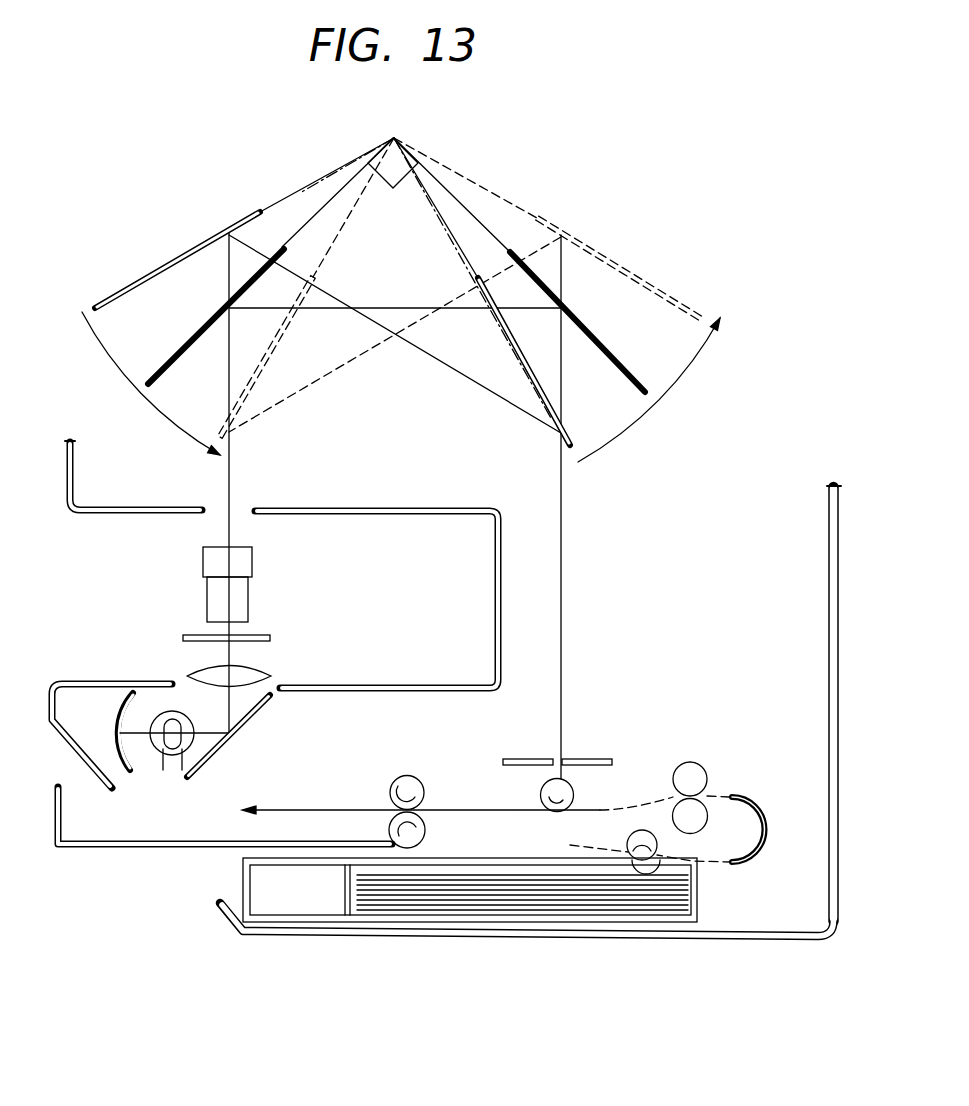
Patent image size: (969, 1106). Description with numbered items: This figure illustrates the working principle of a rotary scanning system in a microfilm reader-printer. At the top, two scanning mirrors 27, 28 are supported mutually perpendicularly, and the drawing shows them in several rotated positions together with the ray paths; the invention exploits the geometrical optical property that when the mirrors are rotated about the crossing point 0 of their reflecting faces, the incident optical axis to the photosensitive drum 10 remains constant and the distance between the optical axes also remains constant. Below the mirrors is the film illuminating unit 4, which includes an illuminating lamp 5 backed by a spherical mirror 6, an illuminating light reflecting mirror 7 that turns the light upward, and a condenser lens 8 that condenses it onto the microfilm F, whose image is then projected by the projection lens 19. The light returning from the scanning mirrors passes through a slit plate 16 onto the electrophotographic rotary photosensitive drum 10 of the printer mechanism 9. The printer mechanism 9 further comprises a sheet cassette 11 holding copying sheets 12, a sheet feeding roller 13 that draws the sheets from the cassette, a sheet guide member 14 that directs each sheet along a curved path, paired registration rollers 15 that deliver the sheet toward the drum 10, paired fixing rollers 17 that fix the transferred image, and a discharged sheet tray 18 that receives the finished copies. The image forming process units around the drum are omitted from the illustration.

The crossing point 0 is at (394, 138).
The scanning mirror 27 is at (127, 290).
The scanning mirror 28 is at (647, 290).
The projection lens 19 is at (244, 587).
The microfilm F is at (266, 637).
The condenser lens 8 is at (250, 672).
The film illuminating unit 4 is at (173, 724).
The illuminating lamp 5 is at (176, 756).
The spherical mirror 6 is at (134, 766).
The illuminating light reflecting mirror 7 is at (224, 753).
The discharged sheet tray 18 is at (123, 848).
The paired fixing rollers 17 is at (400, 778).
The electrophotographic rotary photosensitive drum 10 is at (543, 789).
The slit plate 16 is at (586, 758).
The printer mechanism 9 is at (613, 797).
The paired registration rollers 15 is at (698, 777).
The sheet feeding roller 13 is at (628, 835).
The sheet guide member 14 is at (752, 853).
The sheet cassette 11 is at (433, 915).
The copying sheets 12 is at (530, 902).